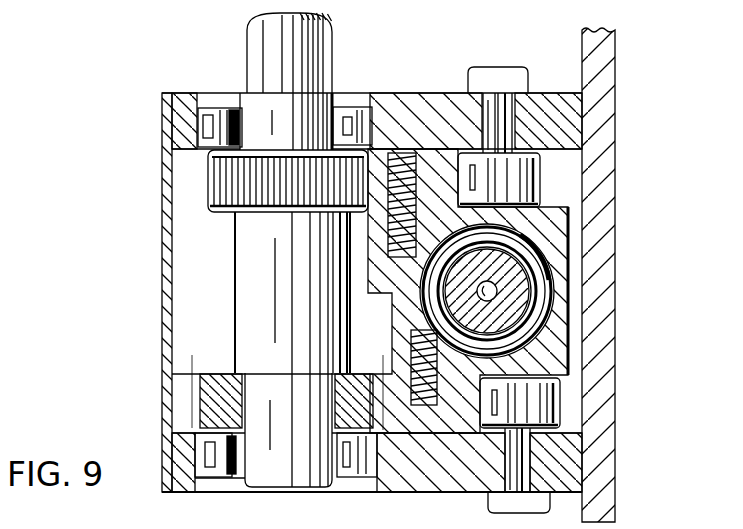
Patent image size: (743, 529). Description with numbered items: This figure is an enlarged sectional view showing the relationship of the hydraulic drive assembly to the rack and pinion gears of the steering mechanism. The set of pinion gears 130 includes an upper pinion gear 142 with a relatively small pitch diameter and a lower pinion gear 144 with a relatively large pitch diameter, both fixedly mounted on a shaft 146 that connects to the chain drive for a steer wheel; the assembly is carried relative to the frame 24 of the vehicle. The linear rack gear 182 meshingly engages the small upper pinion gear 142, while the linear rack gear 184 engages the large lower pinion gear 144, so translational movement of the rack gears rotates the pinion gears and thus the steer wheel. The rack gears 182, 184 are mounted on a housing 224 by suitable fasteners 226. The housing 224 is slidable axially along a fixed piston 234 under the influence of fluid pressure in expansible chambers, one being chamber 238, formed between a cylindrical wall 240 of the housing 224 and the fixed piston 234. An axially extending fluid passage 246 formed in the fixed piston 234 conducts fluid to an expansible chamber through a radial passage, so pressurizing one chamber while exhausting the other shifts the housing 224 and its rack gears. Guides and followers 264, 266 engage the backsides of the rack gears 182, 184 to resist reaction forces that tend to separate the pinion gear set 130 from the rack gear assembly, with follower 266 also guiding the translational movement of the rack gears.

The frame 24 is at (615, 94).
The set of pinion gears 130 is at (222, 138).
The upper pinion gear 142 is at (230, 214).
The lower pinion gear 144 is at (187, 405).
The shaft 146 is at (265, 293).
The linear rack gear 182 is at (383, 160).
The linear rack gear 184 is at (410, 413).
The housing 224 is at (569, 200).
The fasteners 226 is at (413, 170).
The fixed piston 234 is at (537, 334).
The expansible chamber 238 is at (530, 321).
The cylindrical wall 240 is at (541, 256).
The fluid passage 246 is at (497, 290).
The follower 264 is at (546, 174).
The follower 266 is at (565, 403).